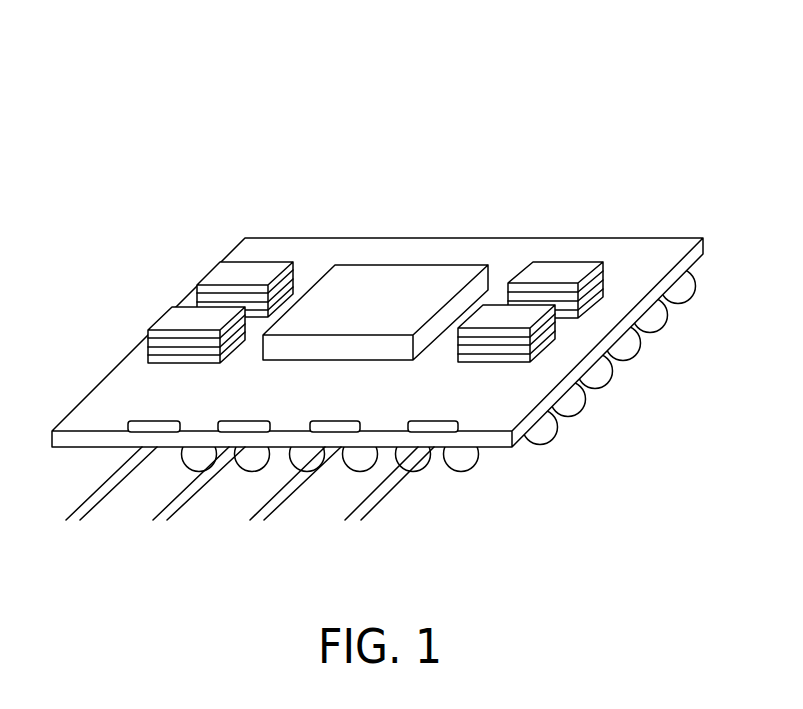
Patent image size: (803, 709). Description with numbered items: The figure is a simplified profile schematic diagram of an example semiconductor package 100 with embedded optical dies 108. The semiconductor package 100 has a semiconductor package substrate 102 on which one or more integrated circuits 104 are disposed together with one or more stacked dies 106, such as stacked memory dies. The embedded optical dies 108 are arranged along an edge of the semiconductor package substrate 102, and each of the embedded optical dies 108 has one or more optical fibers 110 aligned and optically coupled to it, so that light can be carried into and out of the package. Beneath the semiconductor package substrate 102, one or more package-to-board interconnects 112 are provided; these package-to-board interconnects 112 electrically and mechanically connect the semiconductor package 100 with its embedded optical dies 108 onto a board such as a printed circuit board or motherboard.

The semiconductor package 100 is at (641, 50).
The semiconductor package substrate 102 is at (637, 250).
The integrated circuit 104 is at (427, 273).
The stacked dies 106 is at (193, 320).
The embedded optical dies 108 is at (158, 447).
The optical fibers 110 is at (88, 495).
The package-to-board interconnects 112 is at (550, 437).